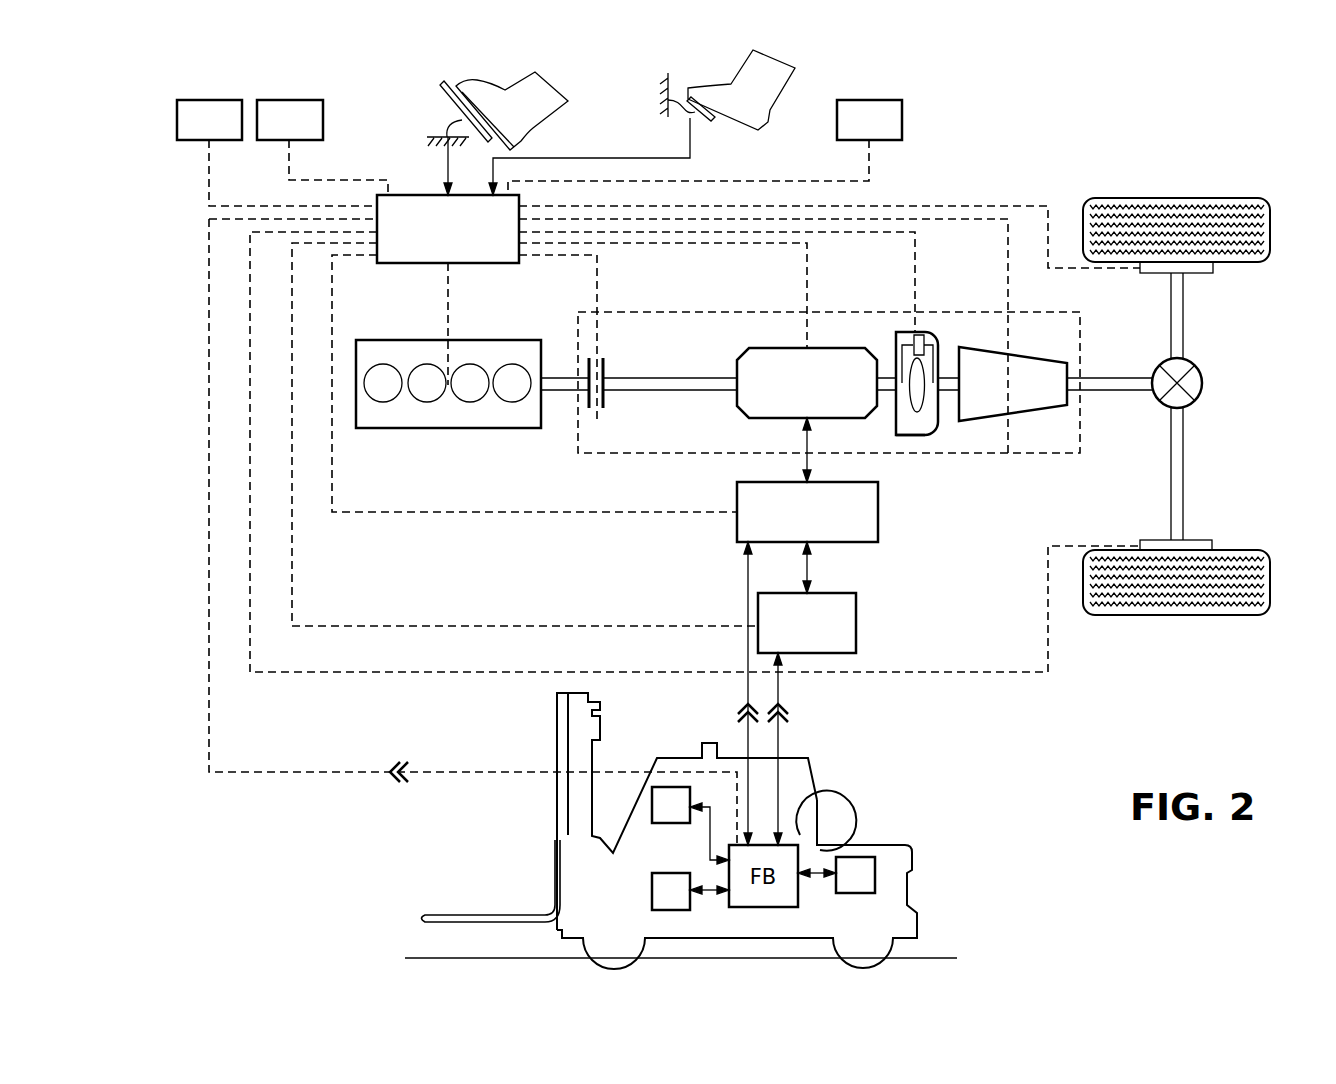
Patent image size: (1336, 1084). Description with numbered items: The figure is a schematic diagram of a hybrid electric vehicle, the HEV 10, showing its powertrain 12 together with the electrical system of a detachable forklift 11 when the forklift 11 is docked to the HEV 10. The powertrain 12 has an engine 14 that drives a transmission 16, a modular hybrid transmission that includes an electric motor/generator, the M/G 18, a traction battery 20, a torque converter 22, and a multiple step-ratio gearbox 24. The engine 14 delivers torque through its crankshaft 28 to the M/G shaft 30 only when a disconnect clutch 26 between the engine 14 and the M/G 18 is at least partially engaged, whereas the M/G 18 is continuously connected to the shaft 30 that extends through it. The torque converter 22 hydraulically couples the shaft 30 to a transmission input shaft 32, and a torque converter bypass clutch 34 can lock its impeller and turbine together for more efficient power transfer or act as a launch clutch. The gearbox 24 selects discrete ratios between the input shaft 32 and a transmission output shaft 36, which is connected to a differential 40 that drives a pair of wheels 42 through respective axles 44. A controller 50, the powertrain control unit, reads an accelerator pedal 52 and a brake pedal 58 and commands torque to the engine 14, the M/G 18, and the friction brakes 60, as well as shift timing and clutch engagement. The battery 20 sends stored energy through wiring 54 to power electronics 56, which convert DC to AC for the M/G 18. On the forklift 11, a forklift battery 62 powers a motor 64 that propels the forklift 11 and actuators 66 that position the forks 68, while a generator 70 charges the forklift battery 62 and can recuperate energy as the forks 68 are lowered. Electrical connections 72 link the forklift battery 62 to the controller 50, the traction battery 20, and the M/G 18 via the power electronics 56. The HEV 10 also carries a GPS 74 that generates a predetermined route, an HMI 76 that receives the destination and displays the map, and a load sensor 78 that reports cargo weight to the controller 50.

The hybrid electric vehicle (HEV) 10 is at (955, 114).
The detachable forklift 11 is at (918, 734).
The powertrain 12 is at (604, 543).
The engine 14 is at (405, 340).
The transmission 16 is at (882, 312).
The electric motor/generator (M/G) 18 is at (777, 348).
The traction battery 20 is at (856, 622).
The torque converter 22 is at (908, 435).
The gearbox 24 is at (1010, 414).
The disconnect clutch 26 is at (608, 372).
The crankshaft 28 is at (572, 378).
The M/G shaft 30 is at (683, 378).
The transmission input shaft 32 is at (948, 378).
The torque converter bypass clutch 34 is at (917, 333).
The transmission output shaft 36 is at (1120, 378).
The differential 40 is at (1202, 385).
The wheels 42 is at (1178, 198).
The axles 44 is at (1183, 340).
The controller 50 is at (412, 195).
The accelerator pedal 52 is at (462, 113).
The wiring 54 is at (812, 568).
The power electronics 56 is at (878, 510).
The brake pedal 58 is at (712, 122).
The friction brakes 60 is at (1213, 268).
The forklift battery 62 is at (815, 803).
The motor 64 is at (862, 857).
The actuators 66 is at (672, 787).
The forks 68 is at (497, 915).
The generator 70 is at (670, 873).
The electrical connections 72 is at (393, 765).
The global positioning system (GPS) 74 is at (177, 122).
The human machine interface (HMI) 76 is at (293, 100).
The load sensor 78 is at (866, 100).